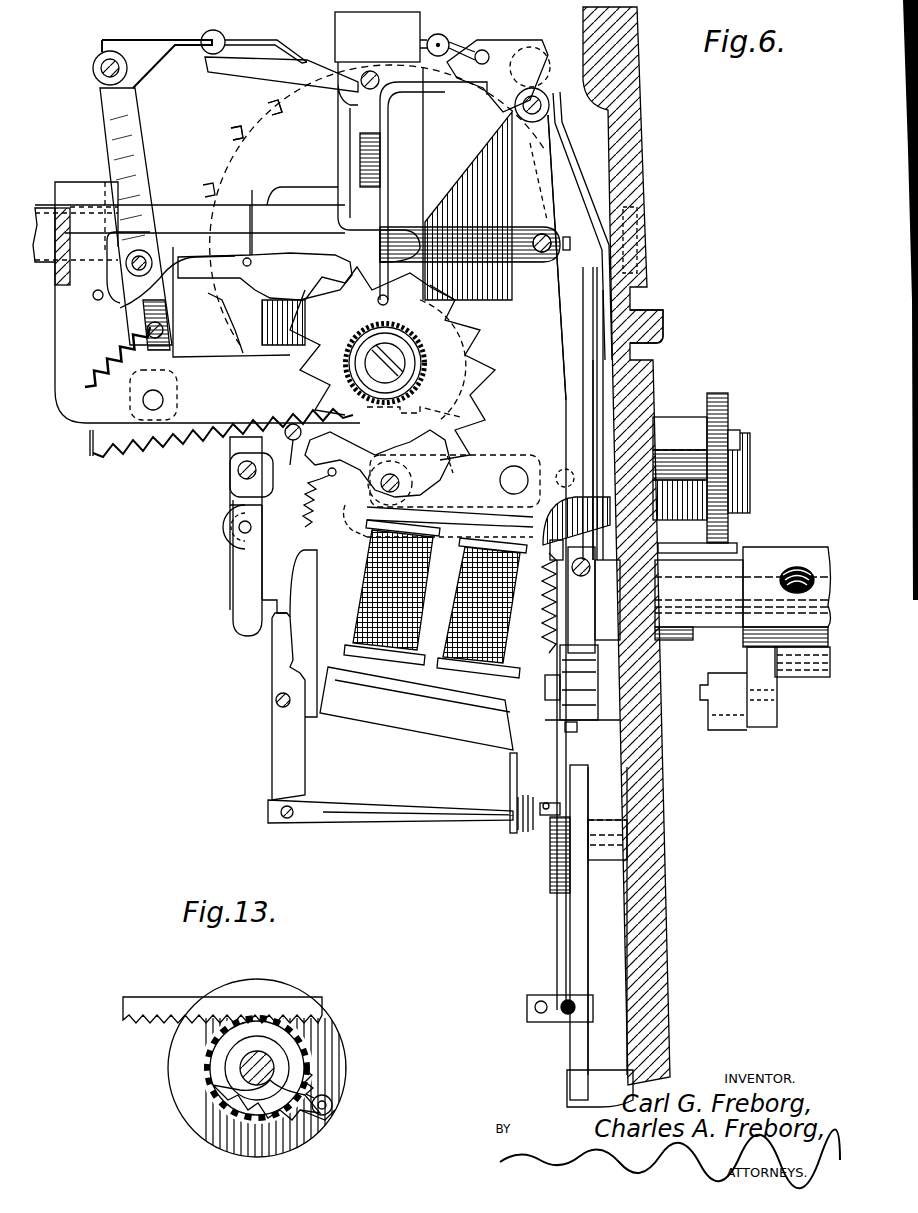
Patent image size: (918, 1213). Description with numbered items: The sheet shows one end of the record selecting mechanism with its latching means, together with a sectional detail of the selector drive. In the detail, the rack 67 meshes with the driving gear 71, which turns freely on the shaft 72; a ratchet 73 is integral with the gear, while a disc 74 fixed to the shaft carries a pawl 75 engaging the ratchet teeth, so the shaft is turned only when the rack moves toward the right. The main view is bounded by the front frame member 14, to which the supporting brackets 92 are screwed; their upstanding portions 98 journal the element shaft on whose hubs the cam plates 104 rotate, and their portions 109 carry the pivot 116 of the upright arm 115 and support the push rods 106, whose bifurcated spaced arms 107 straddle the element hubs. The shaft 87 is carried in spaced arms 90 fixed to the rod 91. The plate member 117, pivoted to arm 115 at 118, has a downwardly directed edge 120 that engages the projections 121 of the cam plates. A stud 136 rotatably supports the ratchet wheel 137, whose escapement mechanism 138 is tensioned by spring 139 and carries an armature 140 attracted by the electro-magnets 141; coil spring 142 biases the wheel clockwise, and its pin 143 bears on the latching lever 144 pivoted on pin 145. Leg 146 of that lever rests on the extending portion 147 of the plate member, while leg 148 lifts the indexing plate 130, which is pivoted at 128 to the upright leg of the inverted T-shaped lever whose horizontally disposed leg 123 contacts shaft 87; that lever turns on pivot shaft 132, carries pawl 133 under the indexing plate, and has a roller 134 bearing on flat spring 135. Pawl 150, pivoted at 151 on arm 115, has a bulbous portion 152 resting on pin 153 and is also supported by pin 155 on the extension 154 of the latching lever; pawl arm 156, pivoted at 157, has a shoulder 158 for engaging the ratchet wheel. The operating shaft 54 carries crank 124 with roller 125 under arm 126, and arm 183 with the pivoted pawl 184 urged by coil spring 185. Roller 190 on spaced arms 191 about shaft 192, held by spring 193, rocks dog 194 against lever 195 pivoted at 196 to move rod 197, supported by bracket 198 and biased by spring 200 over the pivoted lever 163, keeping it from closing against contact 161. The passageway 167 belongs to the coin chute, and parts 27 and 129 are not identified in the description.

In FIG. 6, the front frame member 14 is at (640, 114).
In FIG. 6, the pin 27 is at (640, 210).
In FIG. 6, the operating shaft 54 is at (722, 587).
In FIG. 13, the rack 67 is at (160, 1003).
In FIG. 13, the driving gear 71 is at (298, 1053).
In FIG. 13, the shaft 72 is at (245, 1070).
In FIG. 13, the ratchet 73 is at (228, 1110).
In FIG. 13, the disc 74 is at (178, 1085).
In FIG. 13, the pawl 75 is at (330, 1112).
In FIG. 6, the shaft 87 is at (397, 447).
In FIG. 6, the spaced arms 90 is at (453, 473).
In FIG. 6, the rod 91 is at (514, 466).
In FIG. 6, the supporting brackets 92 is at (597, 360).
In FIG. 6, the upstanding portions 98 is at (413, 107).
In FIG. 6, the cam plates 104 is at (237, 160).
In FIG. 6, the push rods 106 is at (45, 207).
In FIG. 6, the spaced arms 107 is at (305, 186).
In FIG. 6, the portions 109 is at (70, 397).
In FIG. 6, the arm 115 is at (108, 112).
In FIG. 6, the pivot 116 is at (150, 409).
In FIG. 6, the plate member 117 is at (182, 46).
In FIG. 6, the pivot 118 is at (93, 69).
In FIG. 6, the downwardly directed edge 120 is at (292, 52).
In FIG. 6, the projections 121 is at (238, 137).
In FIG. 6, the horizontally disposed leg 123 is at (725, 465).
In FIG. 6, the crank 124 is at (777, 685).
In FIG. 6, the roller 125 is at (735, 732).
In FIG. 6, the arm 126 is at (722, 508).
In FIG. 6, the pivot 128 is at (530, 65).
In FIG. 6, the roller 129 is at (438, 34).
In FIG. 6, the indexing plate 130 is at (472, 44).
In FIG. 6, the pivot shaft 132 is at (652, 413).
In FIG. 6, the pawl 133 is at (487, 63).
In FIG. 6, the roller 134 is at (538, 96).
In FIG. 6, the flat spring 135 is at (580, 168).
In FIG. 6, the stud 136 is at (428, 330).
In FIG. 6, the ratchet wheel 137 is at (473, 337).
In FIG. 6, the escapement mechanism 138 is at (340, 510).
In FIG. 6, the spring 139 is at (230, 498).
In FIG. 6, the armature 140 is at (490, 510).
In FIG. 6, the electro-magnets 141 is at (473, 613).
In FIG. 6, the coil spring 142 is at (163, 447).
In FIG. 6, the pin 143 is at (388, 358).
In FIG. 6, the latching lever 144 is at (370, 163).
In FIG. 6, the pin 145 is at (338, 92).
In FIG. 6, the leg 146 is at (233, 70).
In FIG. 6, the extending portion 147 is at (201, 36).
In FIG. 6, the leg 148 is at (427, 63).
In FIG. 6, the pawl 150 is at (393, 233).
In FIG. 6, the pivot 151 is at (155, 272).
In FIG. 6, the bulbous portion 152 is at (108, 355).
In FIG. 6, the pin 153 is at (95, 300).
In FIG. 6, the extension 154 is at (215, 285).
In FIG. 6, the pin 155 is at (253, 230).
In FIG. 6, the pawl arm 156 is at (490, 230).
In FIG. 6, the pivot 157 is at (563, 250).
In FIG. 6, the shoulder 158 is at (297, 262).
In FIG. 6, the contact 161 is at (535, 1024).
In FIG. 6, the pivoted lever 163 is at (562, 930).
In FIG. 6, the passageway 167 is at (557, 318).
In FIG. 6, the arm 183 is at (587, 693).
In FIG. 6, the pivoted pawl 184 is at (567, 730).
In FIG. 6, the coil spring 185 is at (600, 645).
In FIG. 6, the roller 190 is at (213, 323).
In FIG. 6, the spaced arms 191 is at (237, 446).
In FIG. 6, the shaft 192 is at (239, 527).
In FIG. 6, the spring 193 is at (290, 447).
In FIG. 6, the dog 194 is at (243, 585).
In FIG. 6, the lever 195 is at (280, 740).
In FIG. 6, the pivot 196 is at (276, 700).
In FIG. 6, the rod 197 is at (400, 816).
In FIG. 6, the bracket 198 is at (510, 772).
In FIG. 6, the spring 200 is at (523, 833).